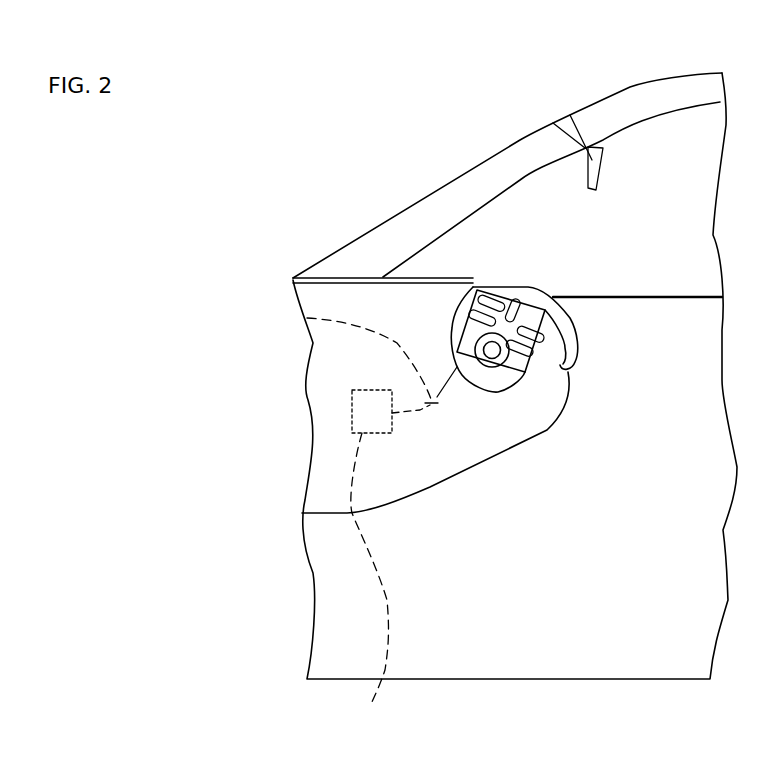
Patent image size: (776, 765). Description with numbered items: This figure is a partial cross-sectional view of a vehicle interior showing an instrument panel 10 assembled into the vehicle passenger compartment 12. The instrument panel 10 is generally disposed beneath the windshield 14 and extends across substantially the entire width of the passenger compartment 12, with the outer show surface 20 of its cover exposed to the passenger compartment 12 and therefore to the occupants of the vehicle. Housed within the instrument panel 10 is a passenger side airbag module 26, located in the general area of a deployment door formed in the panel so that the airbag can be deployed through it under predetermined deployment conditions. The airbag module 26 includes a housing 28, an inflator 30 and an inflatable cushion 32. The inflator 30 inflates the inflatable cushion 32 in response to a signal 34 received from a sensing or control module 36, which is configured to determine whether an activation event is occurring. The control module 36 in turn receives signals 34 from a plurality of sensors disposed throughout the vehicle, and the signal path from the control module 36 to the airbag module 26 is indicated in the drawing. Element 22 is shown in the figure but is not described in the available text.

The instrument panel 10 is at (526, 327).
The vehicle passenger compartment 12 is at (680, 510).
The windshield 14 is at (518, 138).
The outer show surface 20 is at (572, 325).
The retaining strap 22 is at (568, 371).
The passenger side airbag module 26 is at (557, 367).
The housing 28 is at (453, 331).
The inflator 30 is at (488, 392).
The inflatable cushion 32 is at (473, 285).
The signal 34 is at (307, 318).
The control module 36 is at (370, 589).